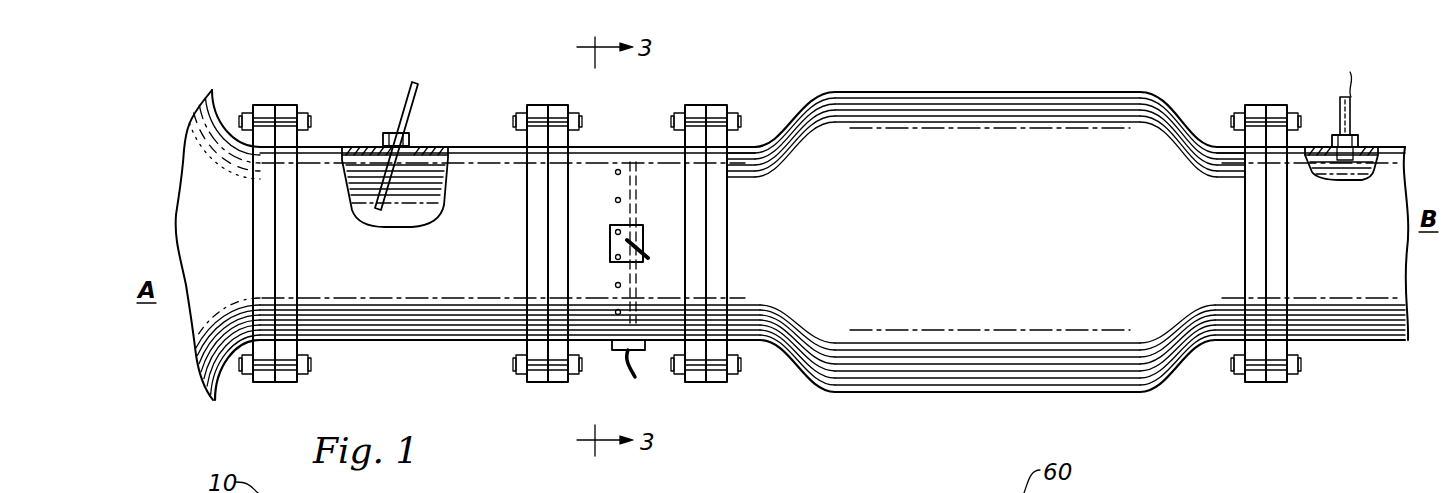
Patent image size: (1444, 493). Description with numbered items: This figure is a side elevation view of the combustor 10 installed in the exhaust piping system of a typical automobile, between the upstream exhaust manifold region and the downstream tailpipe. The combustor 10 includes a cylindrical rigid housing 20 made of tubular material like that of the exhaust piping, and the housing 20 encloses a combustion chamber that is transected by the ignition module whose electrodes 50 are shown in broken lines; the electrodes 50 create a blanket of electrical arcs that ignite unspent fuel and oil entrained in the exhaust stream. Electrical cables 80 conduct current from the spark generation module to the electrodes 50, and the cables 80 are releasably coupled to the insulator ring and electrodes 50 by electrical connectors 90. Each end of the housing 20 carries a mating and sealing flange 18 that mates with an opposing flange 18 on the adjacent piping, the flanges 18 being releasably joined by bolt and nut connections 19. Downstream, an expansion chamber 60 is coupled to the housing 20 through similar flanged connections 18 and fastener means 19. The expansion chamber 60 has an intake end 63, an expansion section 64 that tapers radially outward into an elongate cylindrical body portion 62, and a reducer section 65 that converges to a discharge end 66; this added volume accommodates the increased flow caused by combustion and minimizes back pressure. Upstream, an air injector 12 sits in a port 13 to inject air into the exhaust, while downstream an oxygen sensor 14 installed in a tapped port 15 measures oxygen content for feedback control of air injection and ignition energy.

The combustor 10 is at (241, 63).
The air injector 12 is at (402, 96).
The port 13 is at (397, 162).
The oxygen sensor 14 is at (1340, 106).
The tapped port 15 is at (1367, 145).
The flange 18 is at (281, 105).
The bolt and nut connections 19 is at (307, 118).
The housing 20 is at (622, 147).
The electrodes 50 is at (614, 200).
The expansion chamber 60 is at (970, 78).
The body portion 62 is at (1067, 92).
The intake end 63 is at (728, 248).
The expansion section 64 is at (787, 116).
The reducer section 65 is at (1162, 128).
The discharge end 66 is at (1245, 250).
The electrical cables 80 is at (650, 259).
The electrical connectors 90 is at (645, 227).